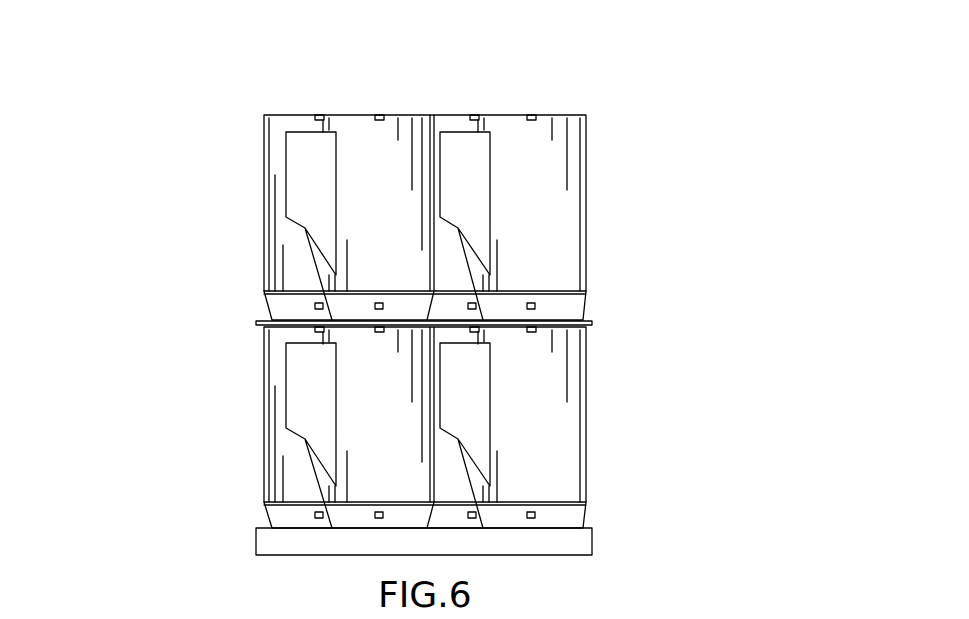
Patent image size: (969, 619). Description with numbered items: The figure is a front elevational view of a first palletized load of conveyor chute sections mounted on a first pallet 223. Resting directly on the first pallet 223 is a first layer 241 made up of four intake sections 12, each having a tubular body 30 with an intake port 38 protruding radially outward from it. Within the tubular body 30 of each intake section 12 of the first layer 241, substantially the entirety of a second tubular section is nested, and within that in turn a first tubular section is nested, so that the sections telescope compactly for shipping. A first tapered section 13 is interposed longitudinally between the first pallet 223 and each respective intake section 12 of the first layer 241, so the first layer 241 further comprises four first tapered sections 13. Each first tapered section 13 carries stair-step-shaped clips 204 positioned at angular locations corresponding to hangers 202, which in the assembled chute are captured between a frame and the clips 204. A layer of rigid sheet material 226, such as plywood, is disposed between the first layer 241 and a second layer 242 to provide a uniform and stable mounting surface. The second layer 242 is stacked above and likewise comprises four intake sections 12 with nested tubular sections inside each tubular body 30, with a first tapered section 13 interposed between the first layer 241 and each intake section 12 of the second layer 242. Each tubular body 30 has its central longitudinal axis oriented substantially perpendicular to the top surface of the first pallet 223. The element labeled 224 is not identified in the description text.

The tubular body 30 is at (293, 114).
The hanger 202 is at (381, 114).
The clip 204 is at (535, 300).
The intake port 38 is at (316, 207).
The intake section 12 is at (388, 211).
The first tapered section 13 is at (296, 315).
The second layer 242 is at (206, 212).
The first layer 241 is at (177, 379).
The rigid sheet material 226 is at (587, 322).
The skirt 224 is at (587, 527).
The first pallet 223 is at (583, 542).